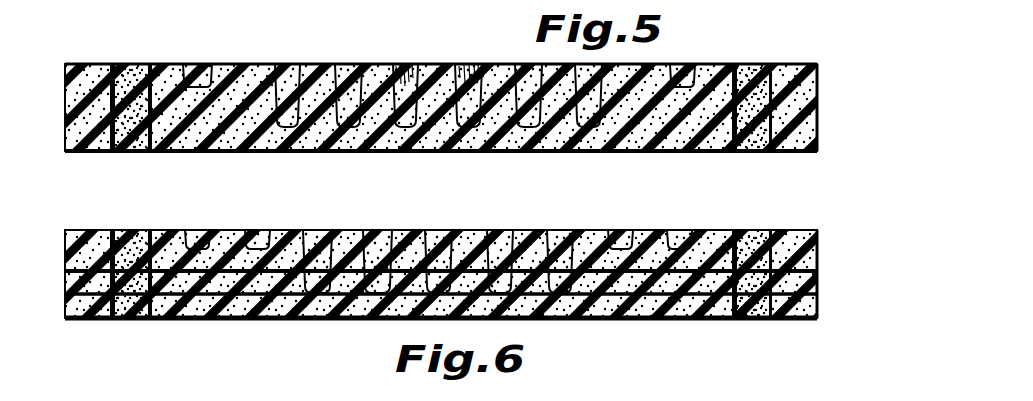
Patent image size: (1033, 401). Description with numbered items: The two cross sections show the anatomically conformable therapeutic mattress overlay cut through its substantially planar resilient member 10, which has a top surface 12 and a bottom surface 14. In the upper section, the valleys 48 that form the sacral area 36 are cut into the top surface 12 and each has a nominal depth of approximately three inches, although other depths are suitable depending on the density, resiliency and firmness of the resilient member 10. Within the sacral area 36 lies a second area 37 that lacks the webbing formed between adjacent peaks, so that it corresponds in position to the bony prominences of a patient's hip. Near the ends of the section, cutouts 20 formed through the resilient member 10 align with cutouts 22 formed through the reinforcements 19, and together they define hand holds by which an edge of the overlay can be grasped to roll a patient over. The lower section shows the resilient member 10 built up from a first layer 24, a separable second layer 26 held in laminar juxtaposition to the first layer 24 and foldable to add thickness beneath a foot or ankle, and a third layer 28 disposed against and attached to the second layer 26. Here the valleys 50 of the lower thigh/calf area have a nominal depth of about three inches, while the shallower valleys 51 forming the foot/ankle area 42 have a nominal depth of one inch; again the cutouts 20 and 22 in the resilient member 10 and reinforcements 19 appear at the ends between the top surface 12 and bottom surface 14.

In FIG. 6, the resilient member 10 is at (553, 323).
In FIG. 5, the top surface 12 is at (233, 64).
In FIG. 6, the top surface 12 is at (527, 233).
In FIG. 5, the bottom surface 14 is at (805, 153).
In FIG. 6, the bottom surface 14 is at (808, 319).
In FIG. 5, the reinforcements 19 is at (412, 152).
In FIG. 5, the cutouts 20 is at (131, 72).
In FIG. 6, the cutouts 20 is at (131, 242).
In FIG. 5, the cutouts 22 is at (131, 152).
In FIG. 6, the cutouts 22 is at (131, 319).
In FIG. 6, the first layer 24 is at (290, 232).
In FIG. 6, the second layer 26 is at (264, 319).
In FIG. 6, the third layer 28 is at (332, 319).
In FIG. 5, the sacral area 36 is at (792, 62).
In FIG. 5, the second area 37 is at (413, 67).
In FIG. 6, the foot/ankle area 42 is at (657, 323).
In FIG. 5, the valleys 48 is at (348, 67).
In FIG. 6, the valleys 50 is at (433, 234).
In FIG. 6, the valleys 51 is at (200, 234).